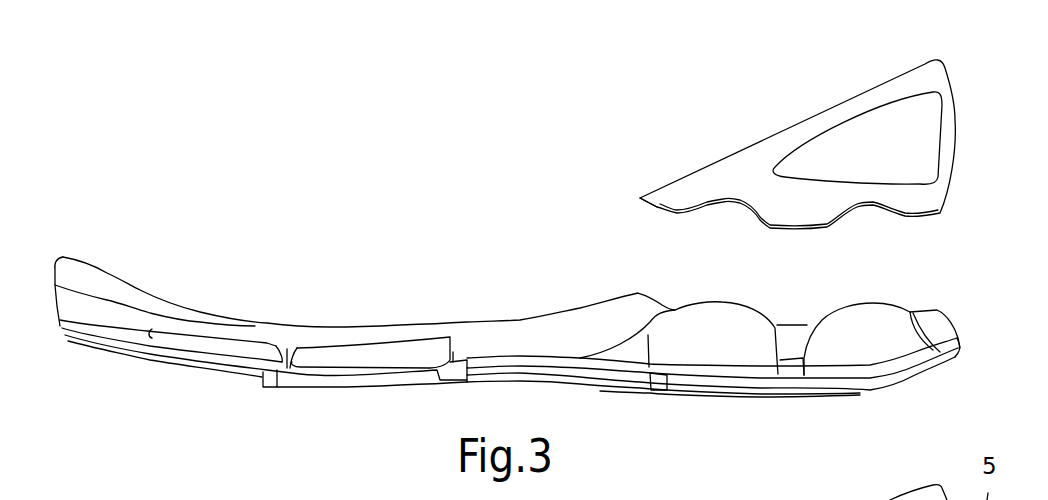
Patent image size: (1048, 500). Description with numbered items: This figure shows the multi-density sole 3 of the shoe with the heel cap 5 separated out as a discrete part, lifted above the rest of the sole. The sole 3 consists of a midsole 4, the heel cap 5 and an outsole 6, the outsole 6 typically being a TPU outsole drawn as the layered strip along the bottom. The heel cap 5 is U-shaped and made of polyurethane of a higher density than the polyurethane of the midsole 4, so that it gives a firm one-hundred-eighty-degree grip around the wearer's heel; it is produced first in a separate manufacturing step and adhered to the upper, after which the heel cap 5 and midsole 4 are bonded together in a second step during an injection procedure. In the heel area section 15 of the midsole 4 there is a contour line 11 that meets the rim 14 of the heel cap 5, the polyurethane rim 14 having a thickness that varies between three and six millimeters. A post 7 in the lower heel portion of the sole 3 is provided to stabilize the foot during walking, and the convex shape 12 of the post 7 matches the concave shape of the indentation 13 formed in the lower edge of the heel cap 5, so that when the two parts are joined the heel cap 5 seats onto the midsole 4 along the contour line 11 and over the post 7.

The multi-density sole 3 is at (245, 110).
The midsole 4 is at (517, 325).
The heel cap 5 is at (963, 120).
The outsole 6 is at (955, 354).
The post 7 is at (668, 360).
The contour line 11 is at (662, 305).
The convex shape 12 is at (753, 302).
The indentation 13 is at (742, 207).
The rim 14 is at (657, 208).
The heel area section 15 is at (968, 407).